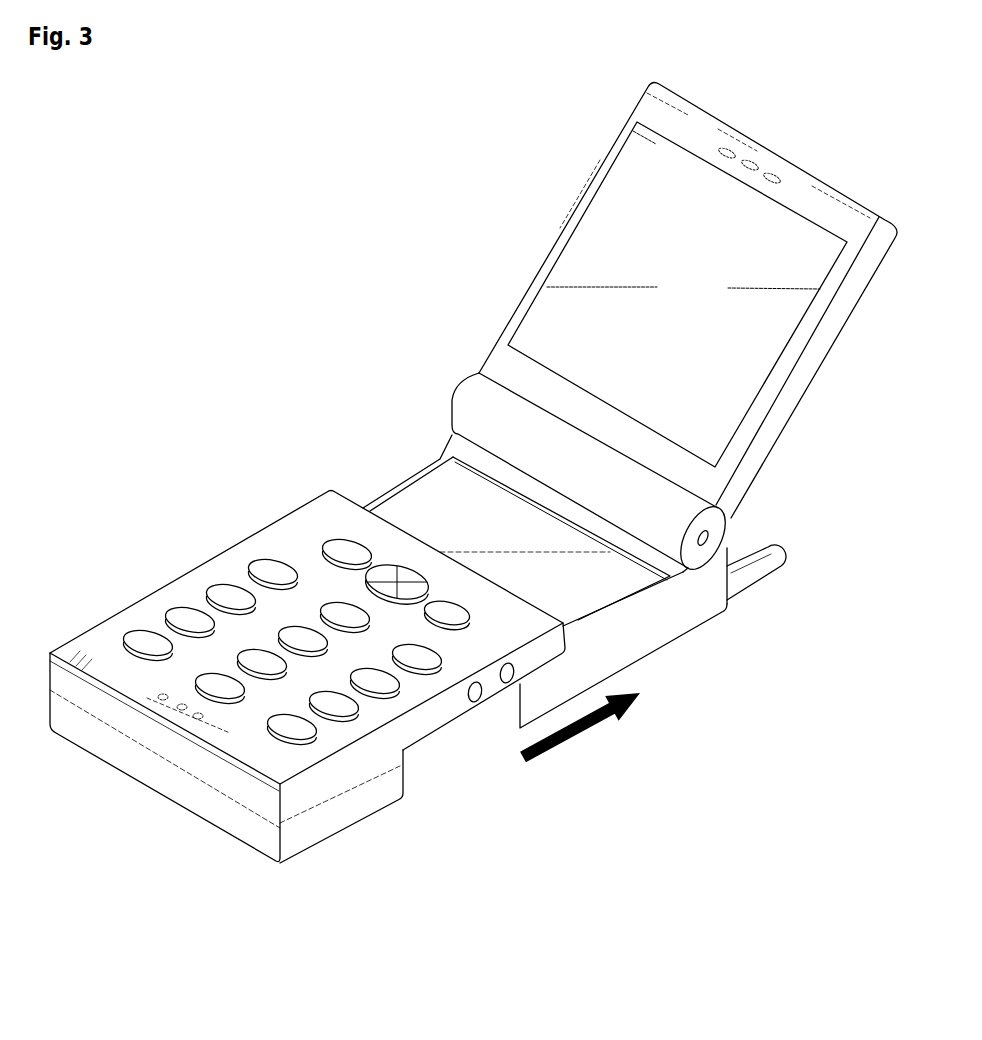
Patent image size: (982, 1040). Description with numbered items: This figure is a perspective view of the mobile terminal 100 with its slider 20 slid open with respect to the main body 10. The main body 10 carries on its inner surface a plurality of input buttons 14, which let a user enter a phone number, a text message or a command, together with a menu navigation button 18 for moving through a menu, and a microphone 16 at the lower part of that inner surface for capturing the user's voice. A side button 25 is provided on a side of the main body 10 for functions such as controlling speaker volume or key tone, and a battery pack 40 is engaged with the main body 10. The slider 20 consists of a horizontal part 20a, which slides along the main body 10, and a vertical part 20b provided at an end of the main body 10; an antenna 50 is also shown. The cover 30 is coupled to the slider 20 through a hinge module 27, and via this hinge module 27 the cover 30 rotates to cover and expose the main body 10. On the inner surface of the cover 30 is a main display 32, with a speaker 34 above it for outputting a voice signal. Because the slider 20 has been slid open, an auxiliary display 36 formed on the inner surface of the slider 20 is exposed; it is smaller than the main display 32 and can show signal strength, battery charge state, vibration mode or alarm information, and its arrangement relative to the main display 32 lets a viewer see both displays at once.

The mobile terminal 100 is at (139, 179).
The main body 10 is at (272, 503).
The input buttons 14 is at (167, 613).
The microphone 16 is at (173, 716).
The menu navigation button 18 is at (320, 548).
The slider 20 is at (743, 697).
The horizontal part 20a is at (683, 628).
The vertical part 20b is at (733, 607).
The side button 25 is at (487, 706).
The hinge module 27 is at (707, 536).
The cover 30 is at (480, 336).
The main display 32 is at (586, 216).
The speaker 34 is at (753, 160).
The auxiliary display 36 is at (600, 598).
The battery pack 40 is at (325, 830).
The antenna 50 is at (780, 572).